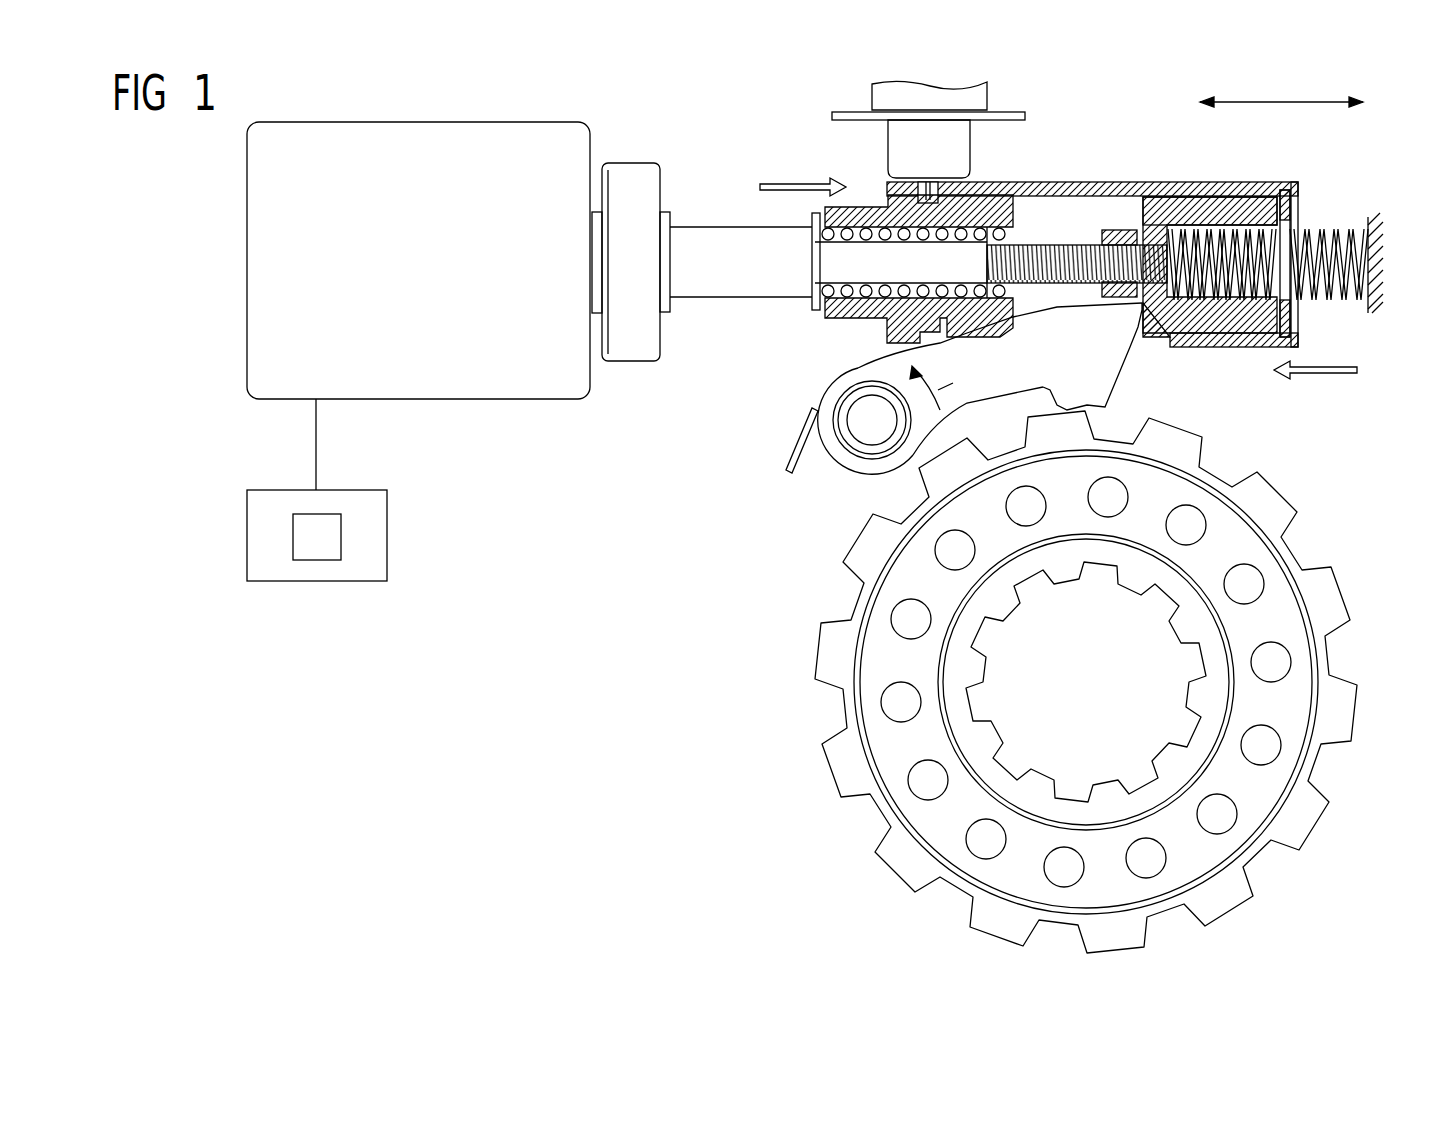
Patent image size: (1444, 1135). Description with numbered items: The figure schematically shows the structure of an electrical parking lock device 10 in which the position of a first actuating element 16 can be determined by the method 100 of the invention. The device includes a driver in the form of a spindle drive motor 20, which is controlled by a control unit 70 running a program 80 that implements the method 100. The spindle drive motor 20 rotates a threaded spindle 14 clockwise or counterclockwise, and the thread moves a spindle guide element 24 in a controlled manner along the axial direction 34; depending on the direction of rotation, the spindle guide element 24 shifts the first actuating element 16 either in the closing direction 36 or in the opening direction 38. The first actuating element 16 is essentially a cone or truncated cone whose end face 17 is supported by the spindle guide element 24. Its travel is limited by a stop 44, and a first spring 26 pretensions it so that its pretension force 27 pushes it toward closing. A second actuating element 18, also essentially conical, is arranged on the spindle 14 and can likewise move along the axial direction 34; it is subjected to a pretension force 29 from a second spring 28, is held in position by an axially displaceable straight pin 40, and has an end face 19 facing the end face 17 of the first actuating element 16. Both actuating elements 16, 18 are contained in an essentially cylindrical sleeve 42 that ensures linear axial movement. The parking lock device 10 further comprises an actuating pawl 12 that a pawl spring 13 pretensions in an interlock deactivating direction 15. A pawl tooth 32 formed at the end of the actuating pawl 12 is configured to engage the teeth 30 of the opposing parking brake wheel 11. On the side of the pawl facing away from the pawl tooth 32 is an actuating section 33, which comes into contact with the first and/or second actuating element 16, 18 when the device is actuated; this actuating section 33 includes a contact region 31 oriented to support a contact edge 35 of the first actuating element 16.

The parking lock device 10 is at (177, 231).
The method 100 is at (184, 302).
The parking brake wheel 11 is at (882, 750).
The actuating pawl 12 is at (1001, 388).
The pawl spring 13 is at (797, 446).
The spindle 14 is at (714, 242).
The interlock deactivating direction 15 is at (945, 384).
The first actuating element 16 is at (1198, 216).
The end face 17 is at (1210, 256).
The second actuating element 18 is at (994, 194).
The end face 19 is at (1016, 216).
The spindle drive motor 20 is at (469, 405).
The spindle guide element 24 is at (1114, 229).
The first spring 26 is at (1330, 232).
The pretension force 27 is at (1333, 373).
The second spring 28 is at (868, 208).
The pretension force 29 is at (784, 184).
The teeth 30 is at (1098, 682).
The contact region 31 is at (1140, 310).
The pawl tooth 32 is at (1087, 407).
The actuating section 33 is at (1063, 306).
The axial direction 34 is at (1280, 100).
The contact edge 35 is at (1165, 327).
The closing direction 36 is at (1213, 101).
The opening direction 38 is at (1348, 101).
The straight pin 40 is at (927, 188).
The sleeve 42 is at (1262, 193).
The stop 44 is at (1293, 323).
The control unit 70 is at (295, 581).
The program 80 is at (322, 560).